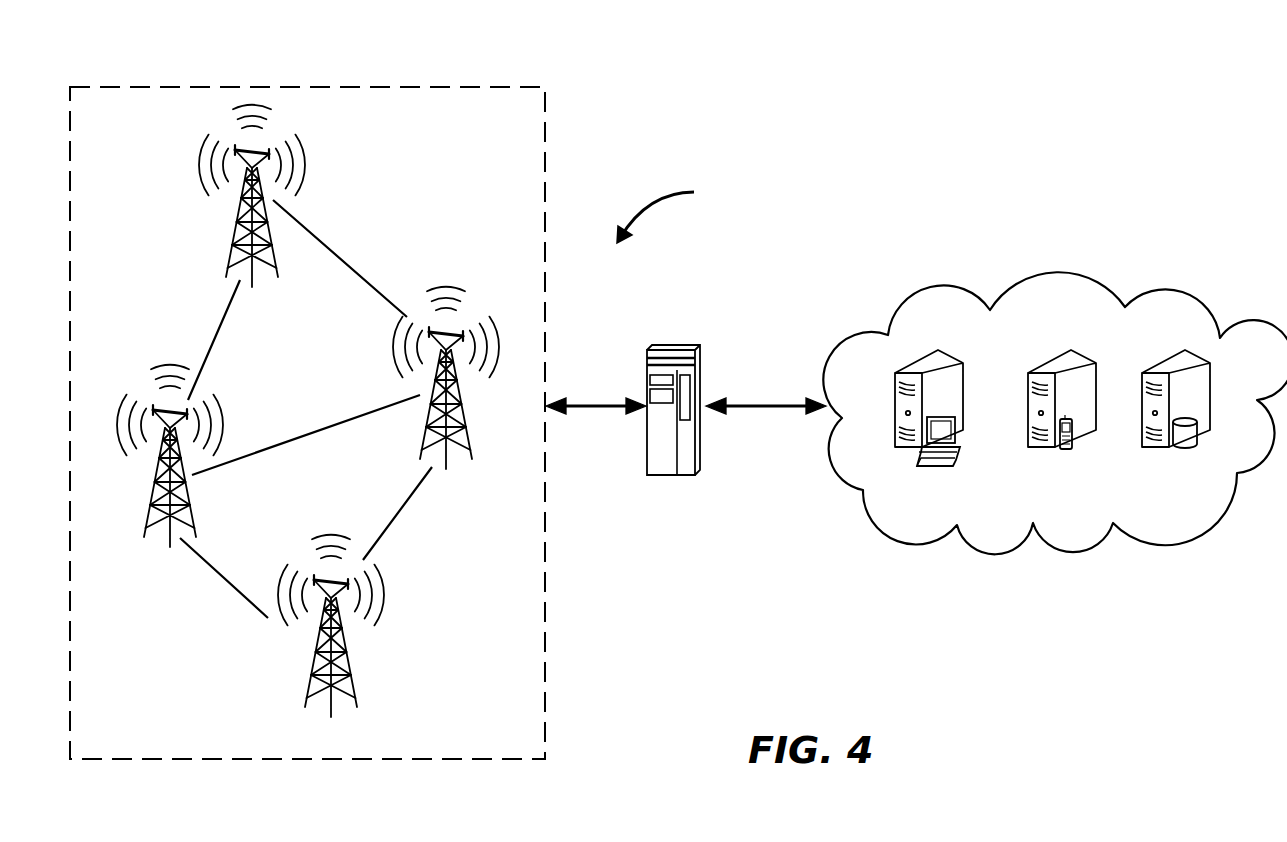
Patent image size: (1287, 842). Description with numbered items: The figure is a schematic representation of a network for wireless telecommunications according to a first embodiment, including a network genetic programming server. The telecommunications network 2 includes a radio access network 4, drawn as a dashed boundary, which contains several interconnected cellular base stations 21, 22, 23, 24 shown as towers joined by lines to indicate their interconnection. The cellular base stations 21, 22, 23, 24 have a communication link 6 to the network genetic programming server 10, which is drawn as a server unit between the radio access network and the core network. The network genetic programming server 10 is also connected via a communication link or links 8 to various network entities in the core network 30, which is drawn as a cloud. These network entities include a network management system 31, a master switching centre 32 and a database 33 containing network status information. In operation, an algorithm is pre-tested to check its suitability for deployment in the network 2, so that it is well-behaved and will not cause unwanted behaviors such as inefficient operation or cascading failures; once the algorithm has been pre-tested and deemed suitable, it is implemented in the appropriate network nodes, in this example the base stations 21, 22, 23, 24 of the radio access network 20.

The telecommunications network 2 is at (665, 211).
The radio access network 4 is at (533, 631).
The communication link 6 is at (590, 412).
The communication link 8 is at (765, 412).
The network genetic programming server 10 is at (682, 345).
The radio access network 20 is at (307, 86).
The cellular base station 21 is at (463, 393).
The cellular base station 22 is at (233, 212).
The cellular base station 23 is at (150, 468).
The cellular base station 24 is at (312, 638).
The core network 30 is at (1065, 270).
The network management system 31 is at (905, 447).
The master switching centre 32 is at (1038, 447).
The database 33 is at (1152, 447).